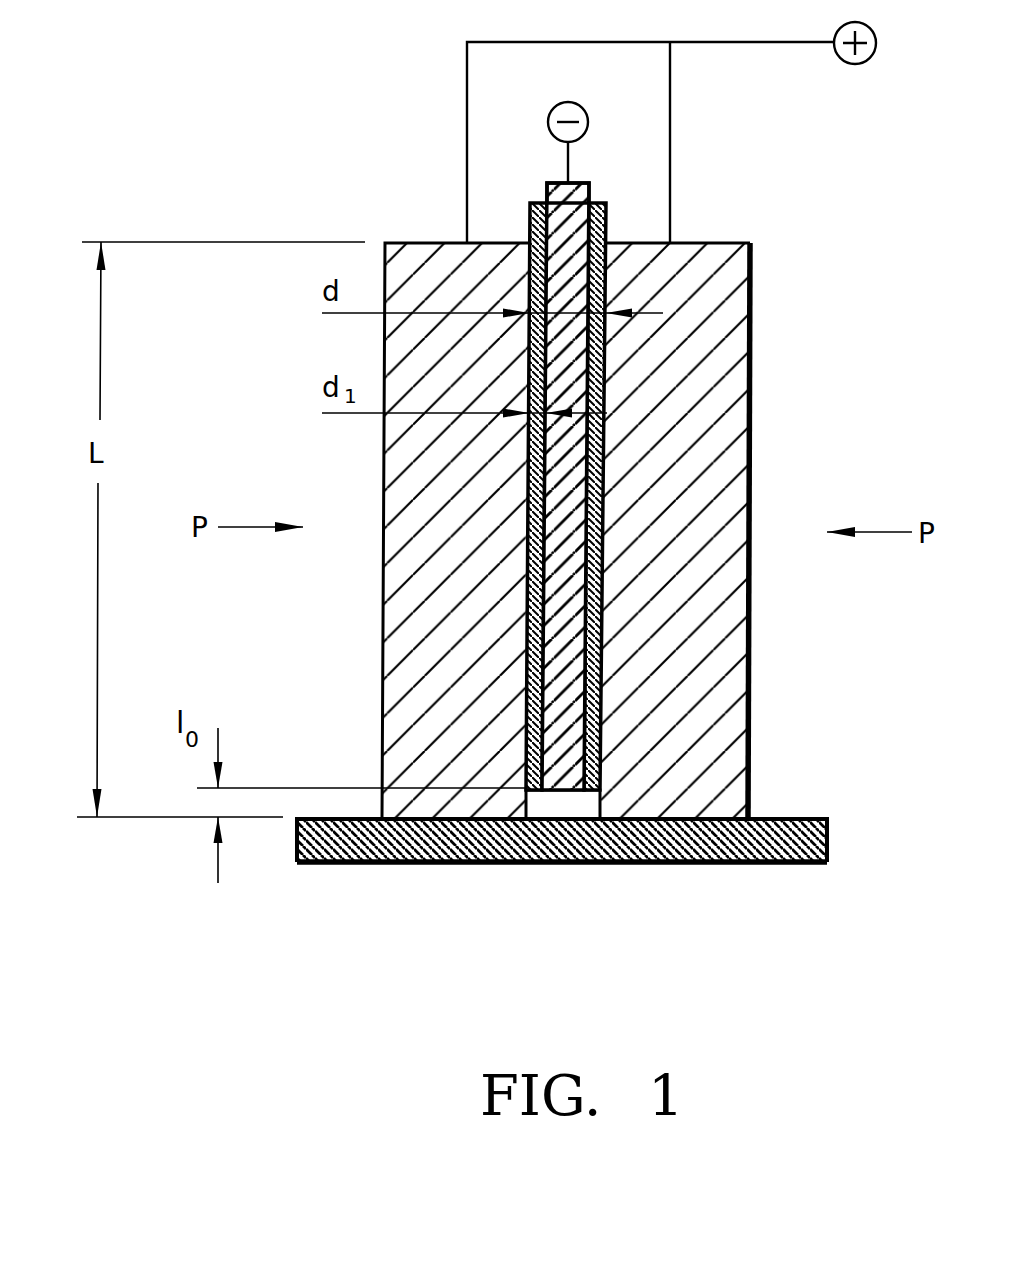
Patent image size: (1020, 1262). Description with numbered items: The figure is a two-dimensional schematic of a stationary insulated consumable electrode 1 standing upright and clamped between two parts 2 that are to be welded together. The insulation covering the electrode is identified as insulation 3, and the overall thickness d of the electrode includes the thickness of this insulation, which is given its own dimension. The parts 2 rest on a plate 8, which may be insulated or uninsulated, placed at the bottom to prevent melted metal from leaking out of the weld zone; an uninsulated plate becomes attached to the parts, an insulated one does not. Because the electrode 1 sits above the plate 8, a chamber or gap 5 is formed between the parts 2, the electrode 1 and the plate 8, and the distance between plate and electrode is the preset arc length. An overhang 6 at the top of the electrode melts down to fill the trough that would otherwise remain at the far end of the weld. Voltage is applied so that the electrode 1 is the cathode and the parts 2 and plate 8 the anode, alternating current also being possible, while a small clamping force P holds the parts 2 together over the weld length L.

The stationary insulated consumable electrode 1 is at (567, 490).
The parts to be welded 2 is at (473, 623).
The insulation of the electrode 3 is at (540, 707).
The chamber or gap 5 is at (553, 803).
The overhang of the electrode 6 is at (547, 193).
The plate 8 is at (800, 845).